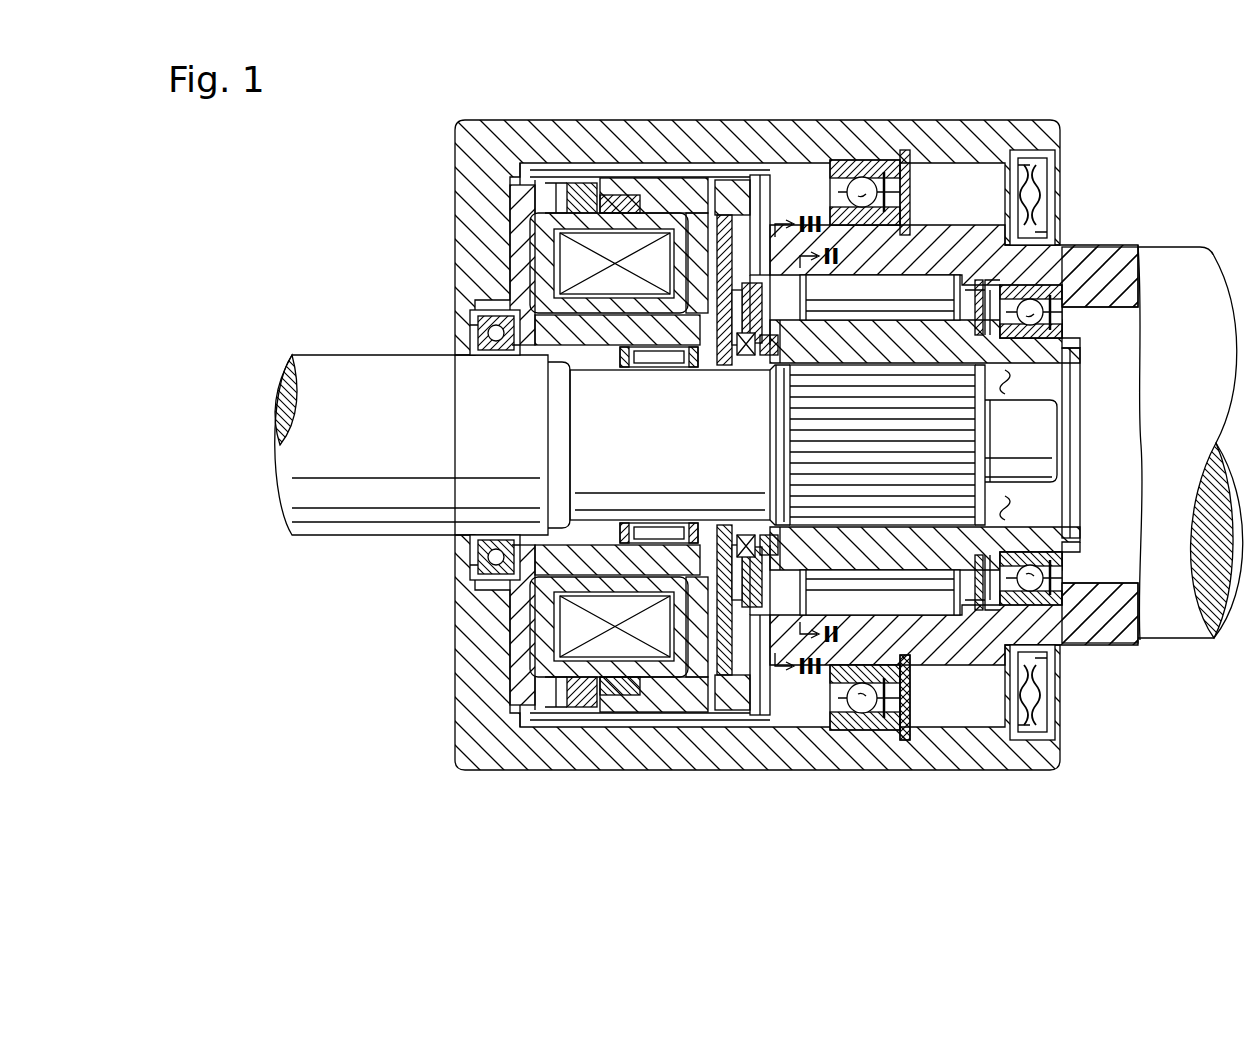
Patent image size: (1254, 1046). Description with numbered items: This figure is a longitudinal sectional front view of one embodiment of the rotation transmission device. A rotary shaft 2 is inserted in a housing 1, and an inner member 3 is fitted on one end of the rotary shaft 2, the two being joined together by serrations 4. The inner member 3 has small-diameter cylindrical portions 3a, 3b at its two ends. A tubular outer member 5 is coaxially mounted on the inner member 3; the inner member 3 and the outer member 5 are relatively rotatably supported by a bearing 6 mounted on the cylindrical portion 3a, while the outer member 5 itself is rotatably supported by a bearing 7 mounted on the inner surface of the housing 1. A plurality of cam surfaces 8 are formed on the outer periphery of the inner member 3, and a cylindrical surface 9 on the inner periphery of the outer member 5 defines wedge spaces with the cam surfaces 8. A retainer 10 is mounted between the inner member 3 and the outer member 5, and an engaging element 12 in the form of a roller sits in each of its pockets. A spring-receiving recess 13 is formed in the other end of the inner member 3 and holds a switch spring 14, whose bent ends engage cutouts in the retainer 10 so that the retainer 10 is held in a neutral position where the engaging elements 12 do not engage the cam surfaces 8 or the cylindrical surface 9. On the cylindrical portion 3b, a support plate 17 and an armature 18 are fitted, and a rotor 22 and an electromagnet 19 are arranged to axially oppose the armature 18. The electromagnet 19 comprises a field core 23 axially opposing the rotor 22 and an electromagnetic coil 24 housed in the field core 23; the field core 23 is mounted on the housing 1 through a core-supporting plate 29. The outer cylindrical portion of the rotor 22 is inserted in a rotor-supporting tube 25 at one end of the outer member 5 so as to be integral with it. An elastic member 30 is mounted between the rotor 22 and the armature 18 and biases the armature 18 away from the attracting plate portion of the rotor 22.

The housing 1 is at (490, 117).
The rotary shaft 2 is at (346, 372).
The inner member 3 is at (948, 330).
The cylindrical portion 3a is at (1068, 378).
The cylindrical portion 3b is at (720, 362).
The serrations 4 is at (800, 428).
The outer member 5 is at (920, 300).
The bearing 6 is at (1045, 290).
The bearing 7 is at (860, 178).
The cam surfaces 8 is at (922, 568).
The cylindrical surface 9 is at (857, 703).
The retainer 10 is at (968, 603).
The engaging element 12 is at (858, 594).
The spring-receiving recess 13 is at (766, 537).
The switch spring 14 is at (740, 540).
The support plate 17 is at (755, 350).
The armature 18 is at (770, 210).
The electromagnet 19 is at (640, 205).
The rotor 22 is at (668, 195).
The field core 23 is at (540, 232).
The electromagnetic coil 24 is at (625, 282).
The rotor-supporting tube 25 is at (718, 188).
The core-supporting plate 29 is at (490, 288).
The elastic member 30 is at (705, 640).